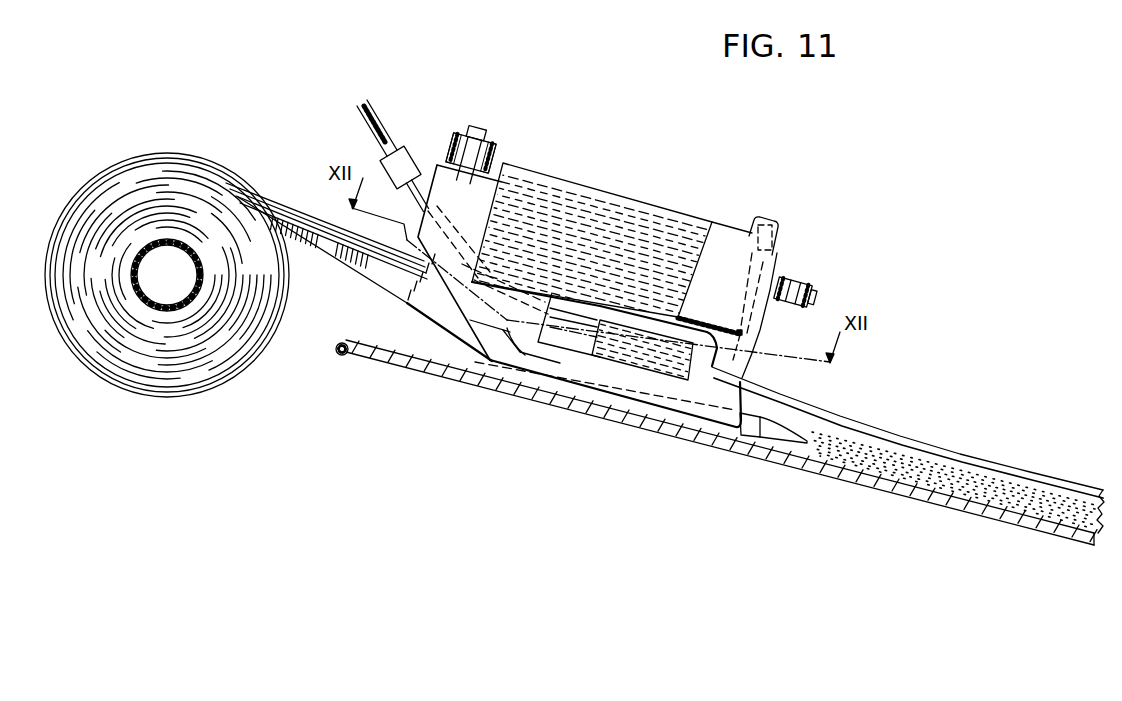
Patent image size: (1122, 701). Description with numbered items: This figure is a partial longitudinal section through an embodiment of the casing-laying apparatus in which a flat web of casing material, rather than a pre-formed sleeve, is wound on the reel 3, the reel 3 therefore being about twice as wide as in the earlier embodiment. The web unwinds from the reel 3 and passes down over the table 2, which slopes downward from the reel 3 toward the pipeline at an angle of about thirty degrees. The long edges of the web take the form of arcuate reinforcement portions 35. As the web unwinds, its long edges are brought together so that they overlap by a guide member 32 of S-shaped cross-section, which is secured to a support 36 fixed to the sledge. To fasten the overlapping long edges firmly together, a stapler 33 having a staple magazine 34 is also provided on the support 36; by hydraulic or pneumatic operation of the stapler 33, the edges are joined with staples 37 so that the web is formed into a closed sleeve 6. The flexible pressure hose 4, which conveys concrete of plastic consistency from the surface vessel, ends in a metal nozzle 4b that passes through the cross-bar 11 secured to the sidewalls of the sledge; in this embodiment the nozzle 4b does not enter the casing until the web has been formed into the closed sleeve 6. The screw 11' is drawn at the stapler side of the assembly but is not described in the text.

The table 2 is at (537, 393).
The reel 3 is at (172, 242).
The flexible pressure hose 4 is at (362, 122).
The metal nozzle 4b is at (772, 438).
The sleeve 6 is at (920, 447).
The cross-bar 11 is at (469, 137).
The fastening screw 11' is at (831, 286).
The guide member 32 is at (628, 357).
The stapler 33 is at (763, 270).
The staple magazine 34 is at (605, 198).
The arcuate reinforcement portions 35 is at (276, 205).
The support 36 is at (514, 329).
The staples 37 is at (742, 333).